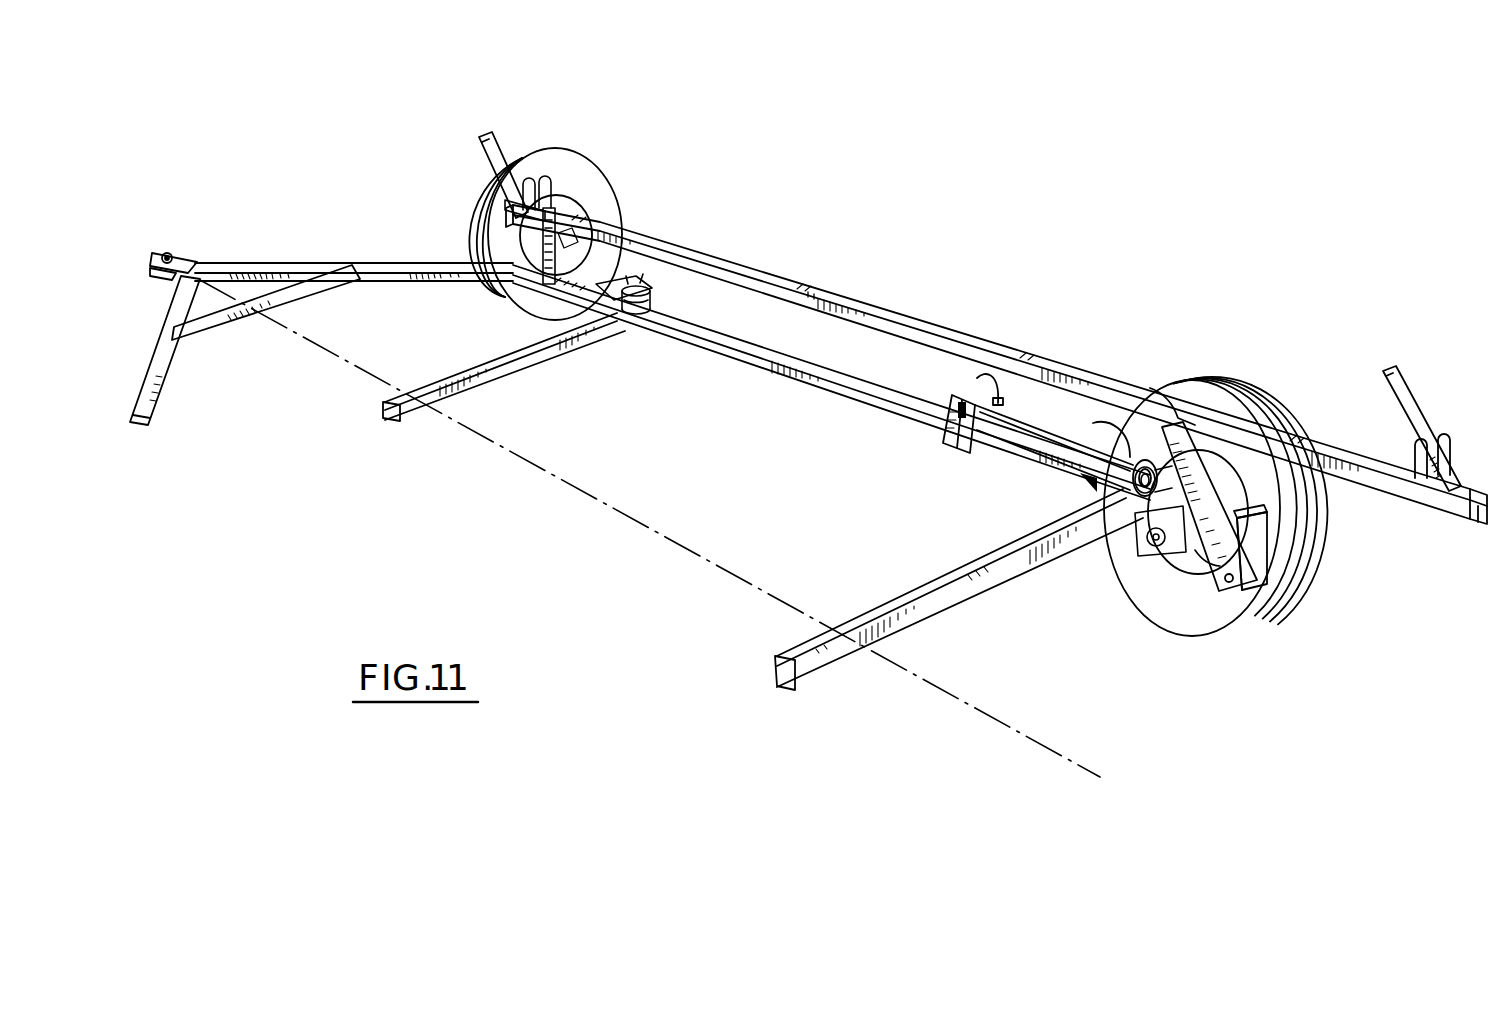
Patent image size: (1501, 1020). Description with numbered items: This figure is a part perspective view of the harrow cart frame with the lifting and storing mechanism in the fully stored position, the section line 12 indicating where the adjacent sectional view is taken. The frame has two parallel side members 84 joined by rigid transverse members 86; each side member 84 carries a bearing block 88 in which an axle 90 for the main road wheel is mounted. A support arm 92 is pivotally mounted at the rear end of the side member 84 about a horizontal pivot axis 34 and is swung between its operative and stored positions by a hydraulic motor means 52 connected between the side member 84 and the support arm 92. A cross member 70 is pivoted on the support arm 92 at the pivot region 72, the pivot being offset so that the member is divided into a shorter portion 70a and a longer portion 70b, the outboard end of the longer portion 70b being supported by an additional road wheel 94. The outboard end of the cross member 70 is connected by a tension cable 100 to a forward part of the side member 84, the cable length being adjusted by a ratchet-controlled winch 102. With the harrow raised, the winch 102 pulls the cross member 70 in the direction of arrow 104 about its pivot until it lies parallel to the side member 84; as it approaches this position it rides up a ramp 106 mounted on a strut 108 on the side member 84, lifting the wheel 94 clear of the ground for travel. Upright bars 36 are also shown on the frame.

The section line 12 is at (595, 286).
The horizontal pivot axis 34 is at (1224, 588).
The upright bar 36 is at (501, 142).
The hydraulic motor means 52 is at (1042, 435).
The cross member 70 is at (912, 311).
The shorter portion 70a is at (1402, 494).
The longer portion 70b is at (826, 290).
The wheel arm 72 is at (1152, 388).
The side member 84 is at (767, 350).
The transverse member 86 is at (528, 365).
The bearing block 88 is at (1137, 533).
The axle 90 is at (1176, 545).
The support arm 92 is at (1208, 560).
The additional road wheel 94 is at (593, 170).
The tension cable 100 is at (607, 280).
The ratchet-controlled winch 102 is at (656, 296).
The arrow 104 is at (1342, 362).
The ramp 106 is at (497, 212).
The strut 108 is at (487, 243).